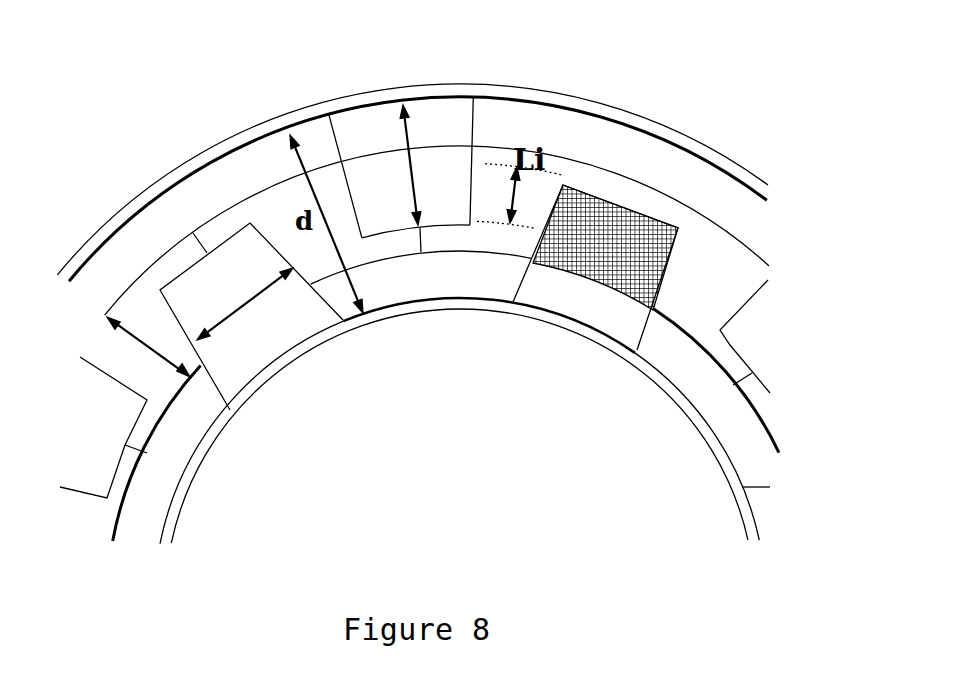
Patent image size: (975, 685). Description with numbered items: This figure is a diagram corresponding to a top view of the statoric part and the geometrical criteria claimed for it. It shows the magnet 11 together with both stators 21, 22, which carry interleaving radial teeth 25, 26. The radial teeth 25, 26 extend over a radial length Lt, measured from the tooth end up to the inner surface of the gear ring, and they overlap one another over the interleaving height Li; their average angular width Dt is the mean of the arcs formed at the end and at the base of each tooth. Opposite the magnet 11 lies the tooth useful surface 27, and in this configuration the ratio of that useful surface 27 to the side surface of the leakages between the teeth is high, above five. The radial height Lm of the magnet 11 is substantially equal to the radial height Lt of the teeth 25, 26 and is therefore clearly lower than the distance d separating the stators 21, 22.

The stator 21 is at (213, 147).
The radial tooth 25 is at (547, 62).
The radial tooth 26 is at (270, 330).
The tooth useful surface 27 is at (617, 228).
The stator 22 is at (470, 303).
The magnet 11 is at (720, 272).